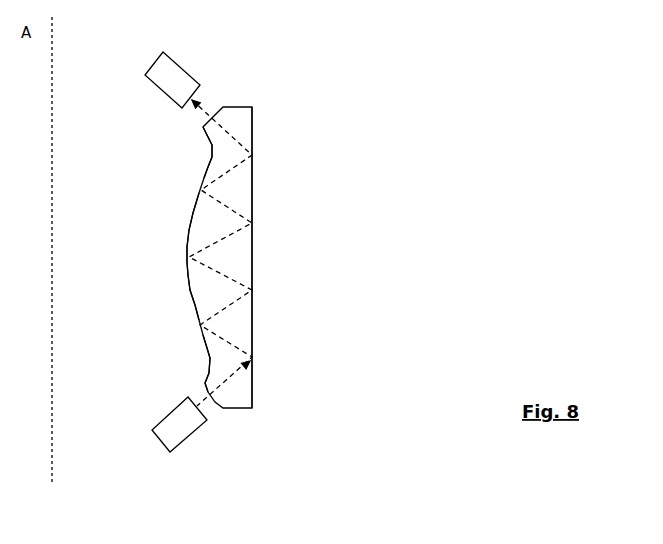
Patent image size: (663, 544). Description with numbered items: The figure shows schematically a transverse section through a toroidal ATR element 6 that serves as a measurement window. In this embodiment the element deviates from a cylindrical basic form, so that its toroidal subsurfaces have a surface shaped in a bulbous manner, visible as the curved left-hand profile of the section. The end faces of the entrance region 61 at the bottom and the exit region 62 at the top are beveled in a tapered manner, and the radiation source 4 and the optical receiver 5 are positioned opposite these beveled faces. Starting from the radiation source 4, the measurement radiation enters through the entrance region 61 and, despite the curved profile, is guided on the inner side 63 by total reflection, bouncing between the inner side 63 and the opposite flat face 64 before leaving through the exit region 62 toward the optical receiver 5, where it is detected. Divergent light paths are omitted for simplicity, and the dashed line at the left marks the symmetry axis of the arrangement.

The toroidal ATR element 6 is at (240, 183).
The exit region 62 is at (203, 127).
The inner side 63 is at (187, 245).
The entrance region 61 is at (205, 385).
The flat reflecting surface 64 is at (254, 243).
The optical receiver 5 is at (147, 72).
The radiation source 4 is at (153, 430).